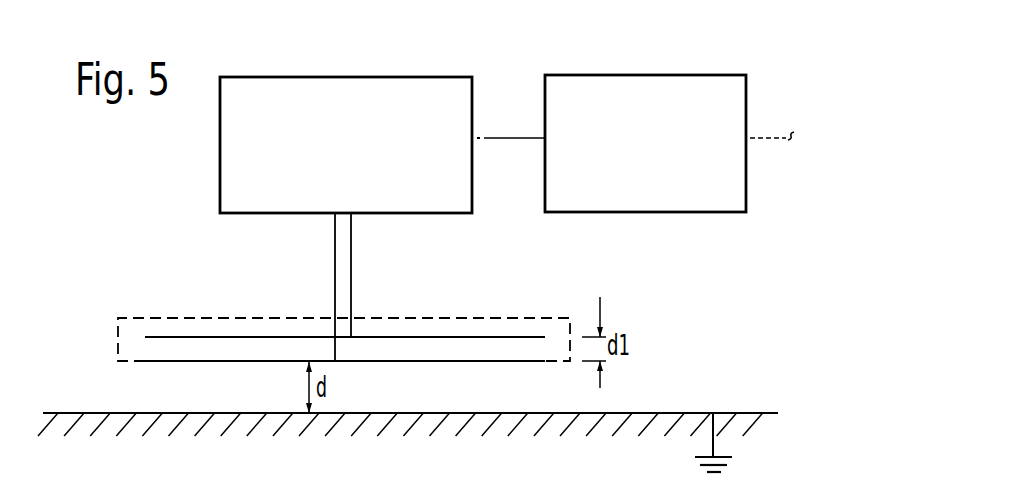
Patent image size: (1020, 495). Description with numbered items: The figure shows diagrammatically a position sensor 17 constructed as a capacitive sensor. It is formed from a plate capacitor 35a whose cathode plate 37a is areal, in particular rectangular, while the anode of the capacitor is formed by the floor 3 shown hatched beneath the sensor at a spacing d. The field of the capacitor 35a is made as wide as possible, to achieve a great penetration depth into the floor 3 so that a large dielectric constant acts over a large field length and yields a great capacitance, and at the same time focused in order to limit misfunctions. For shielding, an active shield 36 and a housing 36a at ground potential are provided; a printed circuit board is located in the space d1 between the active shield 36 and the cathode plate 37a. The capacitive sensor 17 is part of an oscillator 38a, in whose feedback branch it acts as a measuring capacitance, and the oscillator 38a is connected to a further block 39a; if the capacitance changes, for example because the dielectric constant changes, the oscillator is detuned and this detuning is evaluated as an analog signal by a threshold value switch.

The oscillator 38a is at (363, 139).
The display / output unit 39a is at (670, 137).
The plate capacitor 35a is at (182, 348).
The housing 36a is at (262, 318).
The cathode plate 37a is at (413, 360).
The position sensor 17 is at (458, 345).
The active shield 36 is at (527, 337).
The floor 3 is at (458, 416).